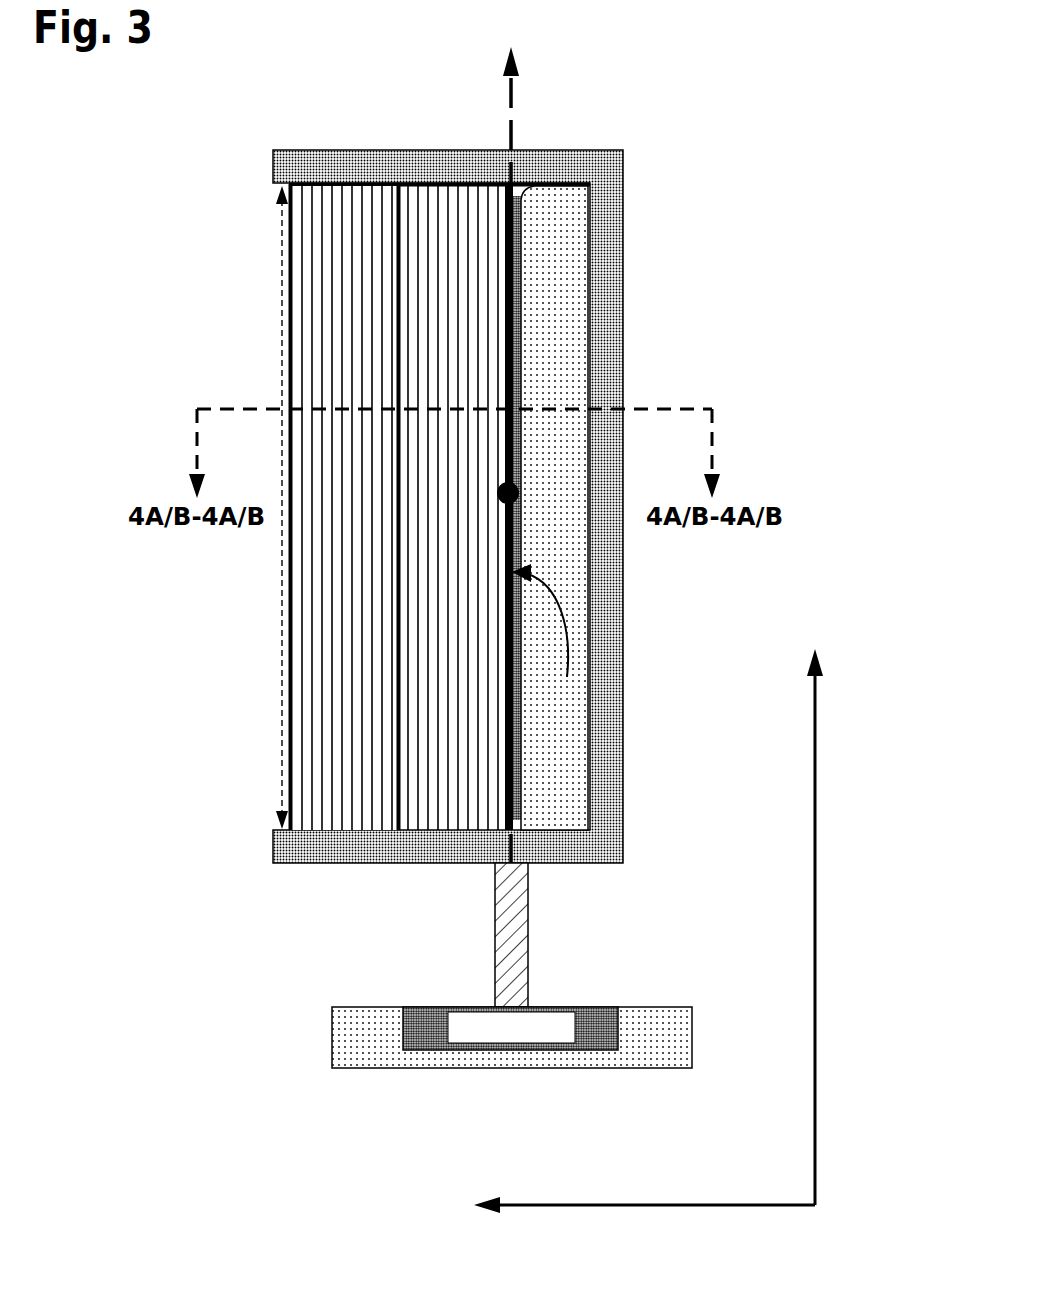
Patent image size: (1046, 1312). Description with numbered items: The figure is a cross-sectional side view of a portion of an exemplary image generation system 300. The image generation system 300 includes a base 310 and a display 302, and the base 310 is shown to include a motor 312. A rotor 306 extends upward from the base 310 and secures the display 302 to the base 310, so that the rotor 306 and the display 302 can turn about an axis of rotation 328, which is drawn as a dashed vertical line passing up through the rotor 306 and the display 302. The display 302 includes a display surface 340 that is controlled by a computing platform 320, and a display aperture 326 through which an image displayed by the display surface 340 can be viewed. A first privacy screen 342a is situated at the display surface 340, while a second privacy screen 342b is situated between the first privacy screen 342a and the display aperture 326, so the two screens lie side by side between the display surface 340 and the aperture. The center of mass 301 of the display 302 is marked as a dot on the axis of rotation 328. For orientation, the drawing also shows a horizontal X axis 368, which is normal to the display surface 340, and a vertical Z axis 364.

The image generation system 300 is at (785, 106).
The center of mass 301 is at (516, 488).
The display 302 is at (623, 611).
The rotor 306 is at (494, 928).
The base 310 is at (692, 1058).
The motor 312 is at (566, 1039).
The computing platform 320 is at (533, 783).
The display aperture 326 is at (281, 694).
The axis of rotation 328 is at (507, 112).
The display surface 340 is at (547, 635).
The first privacy screen 342a is at (425, 501).
The second privacy screen 342b is at (318, 501).
The vertical Z axis 364 is at (817, 840).
The horizontal X axis 368 is at (745, 1203).